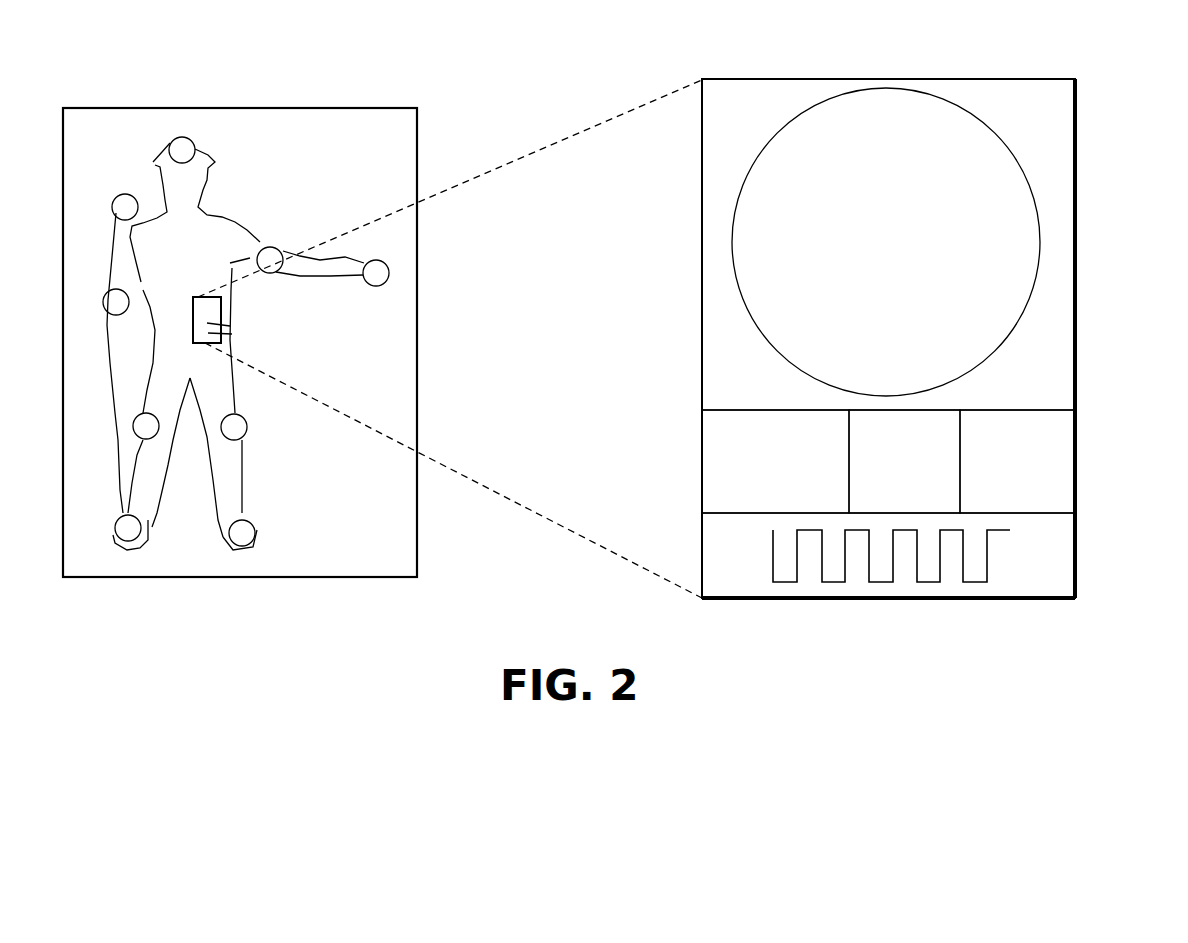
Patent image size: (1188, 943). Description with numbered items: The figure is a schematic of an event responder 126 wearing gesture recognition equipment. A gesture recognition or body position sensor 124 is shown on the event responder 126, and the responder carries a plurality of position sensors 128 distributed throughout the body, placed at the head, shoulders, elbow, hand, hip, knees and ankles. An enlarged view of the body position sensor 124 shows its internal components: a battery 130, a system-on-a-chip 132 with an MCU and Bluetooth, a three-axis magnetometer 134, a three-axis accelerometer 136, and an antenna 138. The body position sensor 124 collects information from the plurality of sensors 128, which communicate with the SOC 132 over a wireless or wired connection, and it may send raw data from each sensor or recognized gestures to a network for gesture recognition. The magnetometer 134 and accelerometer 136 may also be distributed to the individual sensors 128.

The body position sensor 124 is at (225, 327).
The event responder 126 is at (227, 210).
The position sensors 128 is at (170, 148).
The battery 130 is at (1012, 345).
The system-on-a-chip (SOC) 132 is at (757, 410).
The three-axis magnetometer 134 is at (886, 410).
The three-axis accelerometer 136 is at (1015, 410).
The antenna 138 is at (881, 582).